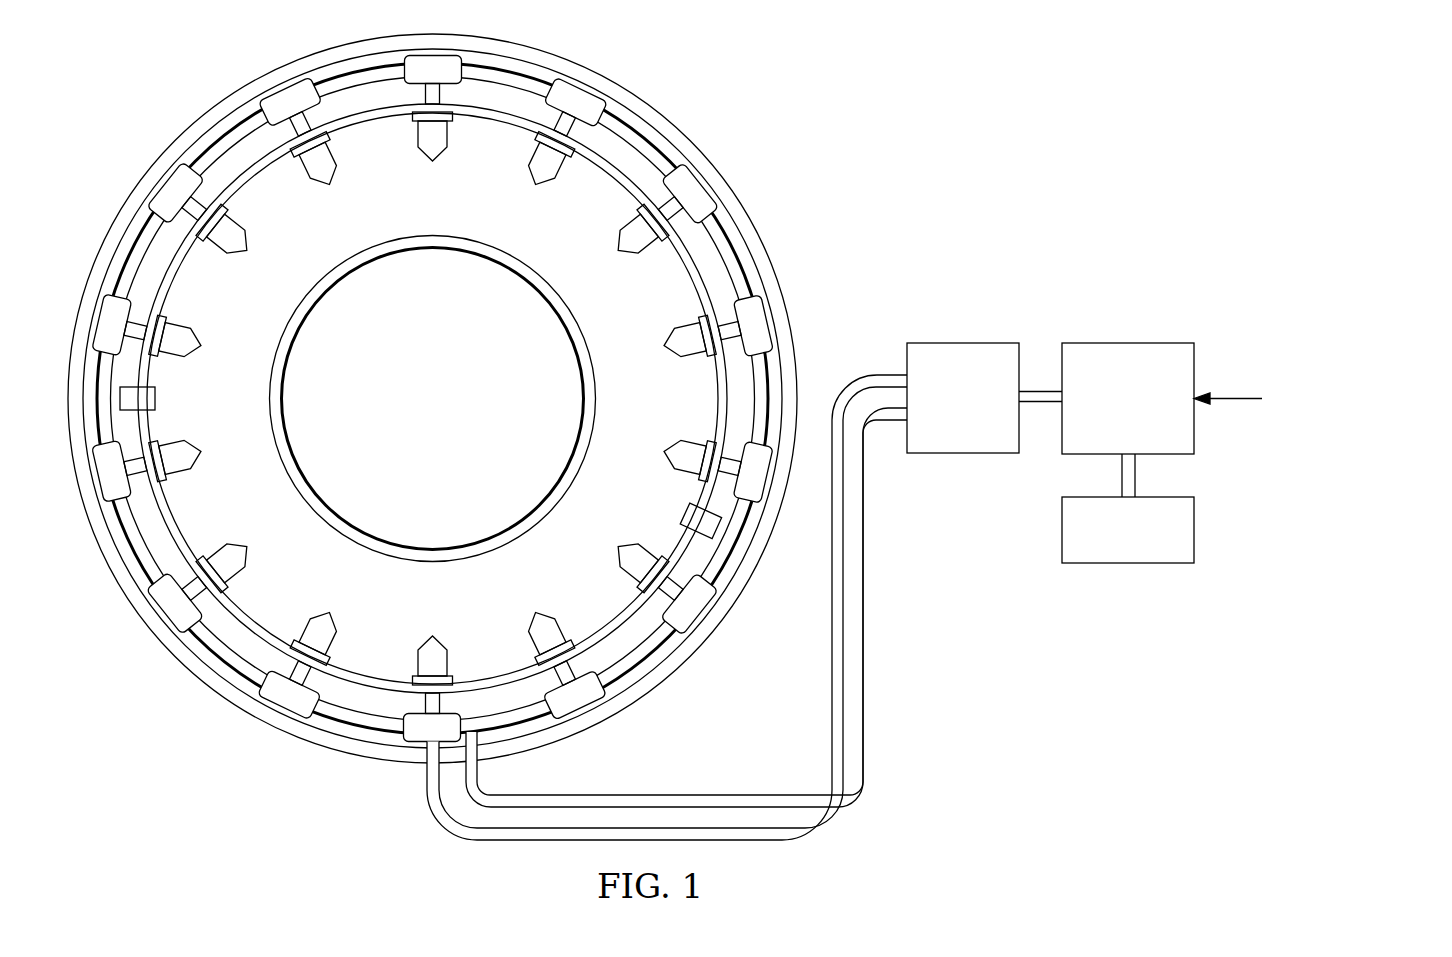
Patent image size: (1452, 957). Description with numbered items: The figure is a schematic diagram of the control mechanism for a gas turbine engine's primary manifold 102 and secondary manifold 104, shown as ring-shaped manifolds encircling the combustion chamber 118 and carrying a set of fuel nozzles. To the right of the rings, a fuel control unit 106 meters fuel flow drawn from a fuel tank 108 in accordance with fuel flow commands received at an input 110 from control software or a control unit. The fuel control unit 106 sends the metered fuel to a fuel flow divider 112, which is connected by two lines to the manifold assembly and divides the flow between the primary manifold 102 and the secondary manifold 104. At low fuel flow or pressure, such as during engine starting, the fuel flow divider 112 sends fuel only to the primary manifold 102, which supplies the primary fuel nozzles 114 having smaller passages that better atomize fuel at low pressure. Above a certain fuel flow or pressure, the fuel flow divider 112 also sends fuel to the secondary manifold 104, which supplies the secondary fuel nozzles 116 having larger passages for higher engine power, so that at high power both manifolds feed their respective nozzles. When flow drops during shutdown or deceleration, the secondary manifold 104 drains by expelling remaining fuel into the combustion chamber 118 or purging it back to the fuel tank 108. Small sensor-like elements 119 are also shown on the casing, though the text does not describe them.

The primary manifold 102 is at (226, 104).
The secondary manifold 104 is at (630, 110).
The fuel control unit 106 is at (1128, 343).
The fuel tank 108 is at (1196, 528).
The input 110 is at (1227, 392).
The fuel flow divider 112 is at (964, 343).
The primary fuel nozzles 114 is at (204, 460).
The secondary fuel nozzles 116 is at (253, 233).
The combustion chamber 118 is at (452, 209).
The sensor 119 is at (158, 400).